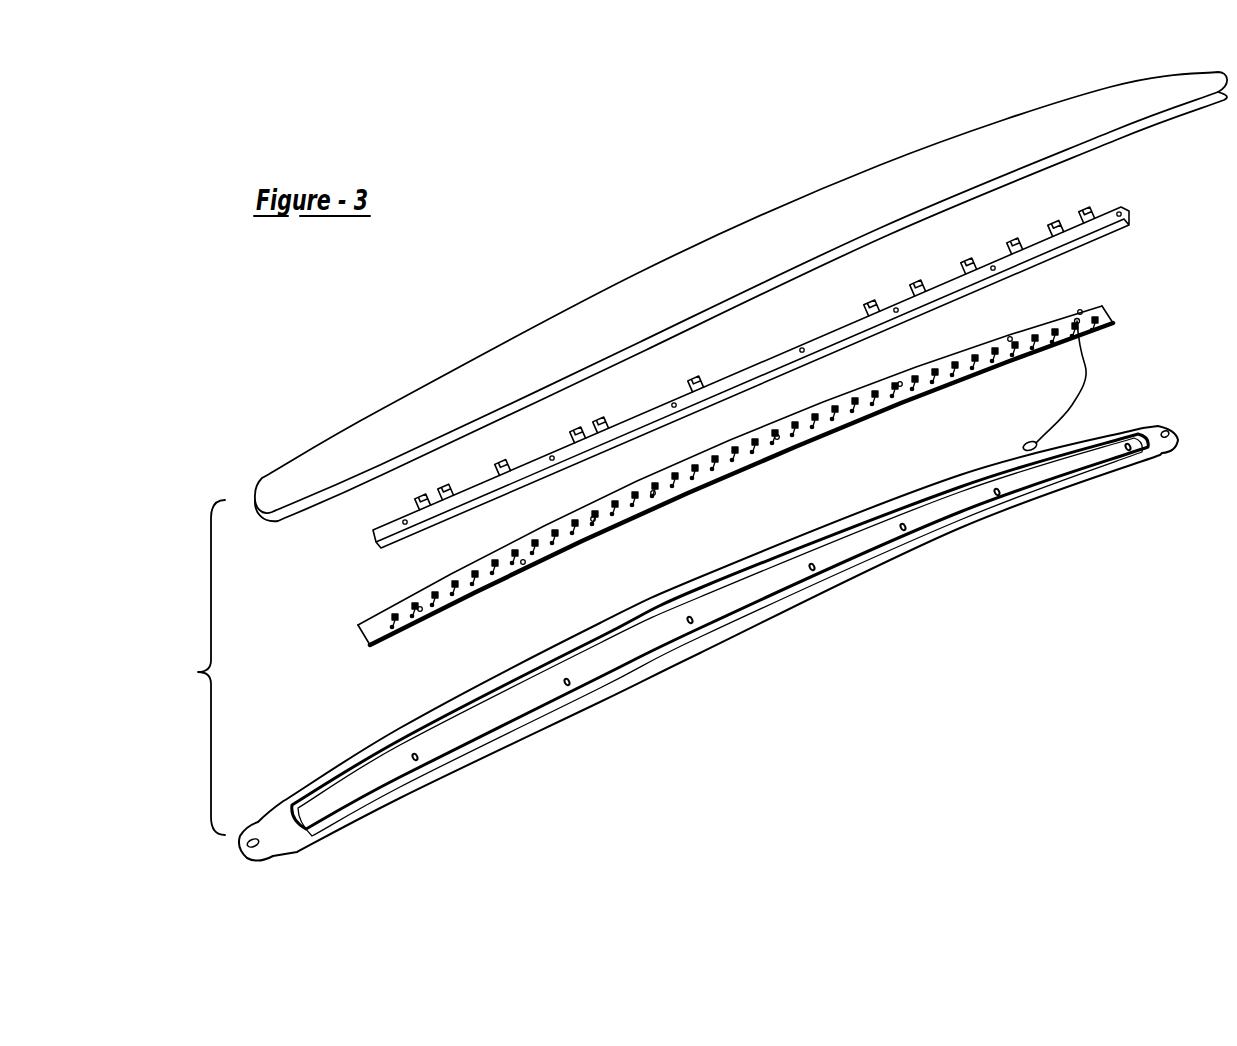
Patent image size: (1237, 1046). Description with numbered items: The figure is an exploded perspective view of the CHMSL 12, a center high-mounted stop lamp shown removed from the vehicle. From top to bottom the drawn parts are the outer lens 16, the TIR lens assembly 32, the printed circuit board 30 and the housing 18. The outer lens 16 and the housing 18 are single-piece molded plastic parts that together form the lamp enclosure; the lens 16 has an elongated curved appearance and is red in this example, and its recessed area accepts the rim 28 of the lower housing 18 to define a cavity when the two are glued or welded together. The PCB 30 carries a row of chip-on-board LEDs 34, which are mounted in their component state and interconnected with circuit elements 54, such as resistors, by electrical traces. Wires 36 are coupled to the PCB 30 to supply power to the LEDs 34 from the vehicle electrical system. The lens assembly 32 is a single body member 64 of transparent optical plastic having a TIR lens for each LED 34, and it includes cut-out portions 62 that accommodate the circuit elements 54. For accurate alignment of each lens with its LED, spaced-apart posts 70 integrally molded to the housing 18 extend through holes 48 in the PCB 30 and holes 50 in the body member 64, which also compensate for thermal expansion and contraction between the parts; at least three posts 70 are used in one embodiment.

The CHMSL 12 is at (597, 214).
The outer lens 16 is at (525, 346).
The housing 18 is at (572, 724).
The rim 28 is at (338, 774).
The printed circuit board 30 is at (755, 437).
The TIR lens assembly 32 is at (850, 320).
The LEDs 34 is at (468, 565).
The wires 36 is at (1090, 397).
The holes 48 is at (522, 548).
The holes 50 is at (550, 450).
The circuit elements 54 is at (523, 563).
The cut-out portions 62 is at (1062, 246).
The body member 64 is at (750, 360).
The posts 70 is at (566, 679).